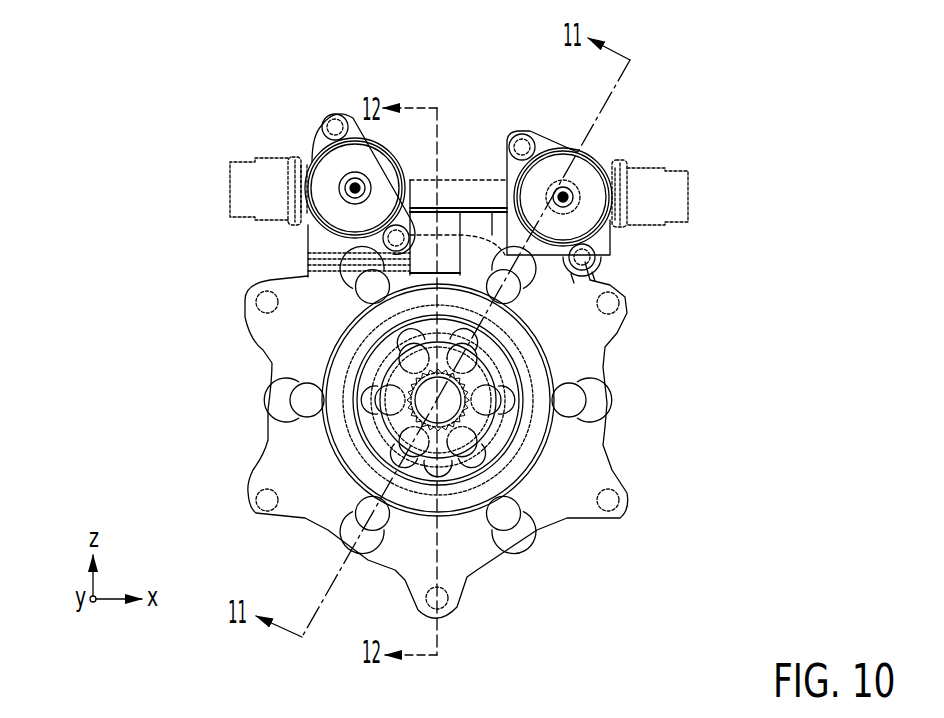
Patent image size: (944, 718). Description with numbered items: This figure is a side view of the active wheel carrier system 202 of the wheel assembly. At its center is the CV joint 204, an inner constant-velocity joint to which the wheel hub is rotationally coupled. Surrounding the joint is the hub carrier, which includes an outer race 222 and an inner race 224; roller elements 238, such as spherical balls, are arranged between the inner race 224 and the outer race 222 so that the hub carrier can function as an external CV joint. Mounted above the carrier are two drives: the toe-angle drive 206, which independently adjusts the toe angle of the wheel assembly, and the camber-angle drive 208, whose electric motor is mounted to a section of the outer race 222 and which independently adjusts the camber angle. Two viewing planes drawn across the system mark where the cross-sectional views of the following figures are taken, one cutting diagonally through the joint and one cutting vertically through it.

The active wheel carrier system 202 is at (155, 105).
The CV joint 204 is at (507, 449).
The toe-angle drive 206 is at (742, 185).
The camber-angle drive 208 is at (217, 182).
The outer race 222 is at (246, 366).
The inner race 224 is at (327, 442).
The roller elements 238 is at (298, 405).